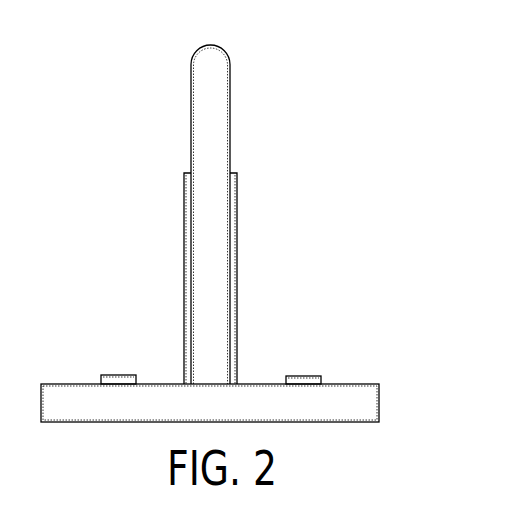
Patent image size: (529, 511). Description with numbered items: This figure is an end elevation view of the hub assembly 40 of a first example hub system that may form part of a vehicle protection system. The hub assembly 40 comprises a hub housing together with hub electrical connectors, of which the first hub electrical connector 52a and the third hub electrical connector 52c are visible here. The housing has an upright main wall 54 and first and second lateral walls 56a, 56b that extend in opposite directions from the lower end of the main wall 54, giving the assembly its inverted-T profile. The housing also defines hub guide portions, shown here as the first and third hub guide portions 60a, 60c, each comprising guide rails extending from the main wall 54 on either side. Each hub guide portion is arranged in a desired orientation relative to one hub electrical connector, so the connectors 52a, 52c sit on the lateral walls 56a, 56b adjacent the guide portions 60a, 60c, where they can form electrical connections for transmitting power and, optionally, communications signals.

The hub assembly 40 is at (413, 100).
The main wall 54 is at (220, 62).
The first hub guide portion 60a is at (174, 171).
The third hub guide portion 60c is at (253, 194).
The first hub electrical connector 52a is at (128, 353).
The third hub electrical connector 52c is at (305, 352).
The first lateral wall 56a is at (80, 422).
The second lateral wall 56b is at (362, 415).